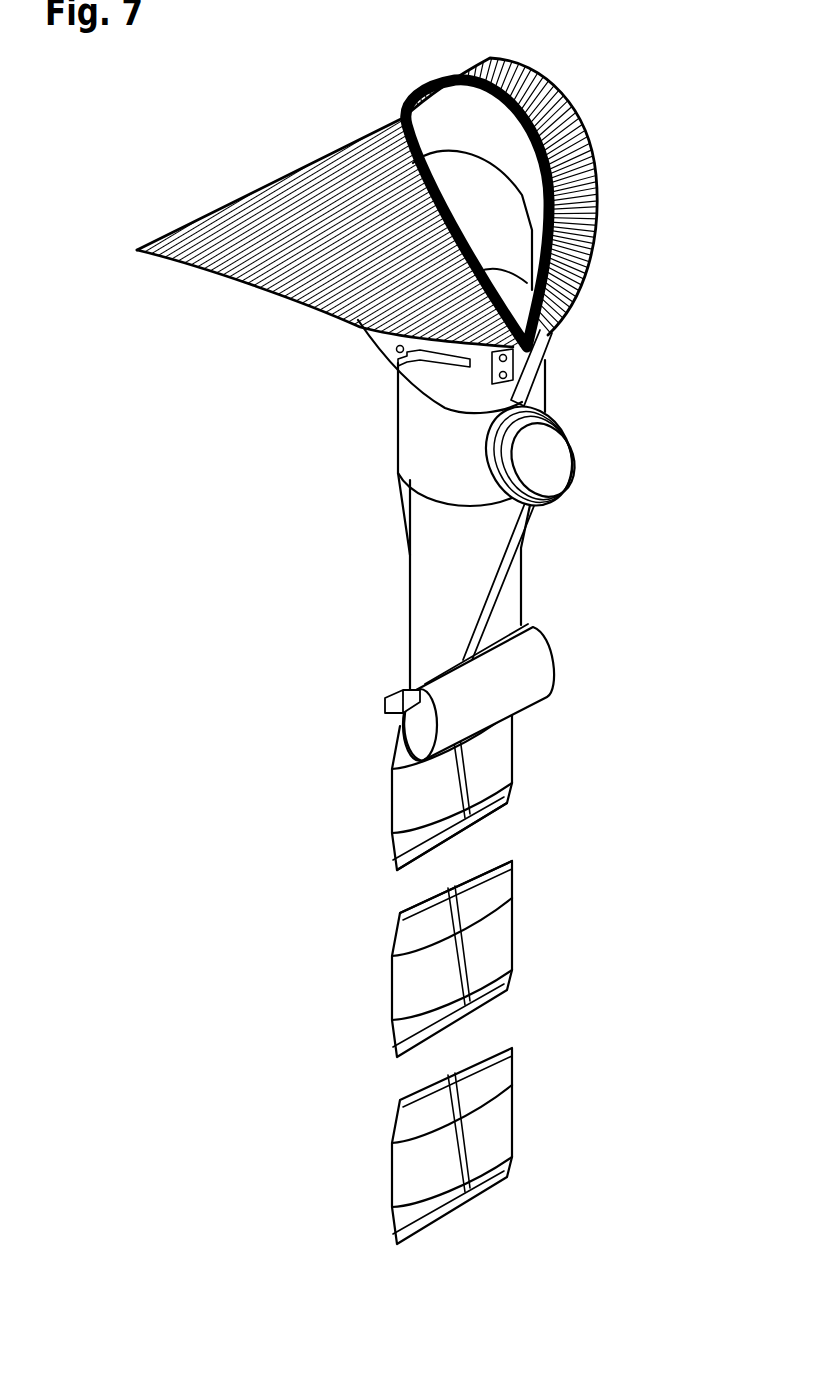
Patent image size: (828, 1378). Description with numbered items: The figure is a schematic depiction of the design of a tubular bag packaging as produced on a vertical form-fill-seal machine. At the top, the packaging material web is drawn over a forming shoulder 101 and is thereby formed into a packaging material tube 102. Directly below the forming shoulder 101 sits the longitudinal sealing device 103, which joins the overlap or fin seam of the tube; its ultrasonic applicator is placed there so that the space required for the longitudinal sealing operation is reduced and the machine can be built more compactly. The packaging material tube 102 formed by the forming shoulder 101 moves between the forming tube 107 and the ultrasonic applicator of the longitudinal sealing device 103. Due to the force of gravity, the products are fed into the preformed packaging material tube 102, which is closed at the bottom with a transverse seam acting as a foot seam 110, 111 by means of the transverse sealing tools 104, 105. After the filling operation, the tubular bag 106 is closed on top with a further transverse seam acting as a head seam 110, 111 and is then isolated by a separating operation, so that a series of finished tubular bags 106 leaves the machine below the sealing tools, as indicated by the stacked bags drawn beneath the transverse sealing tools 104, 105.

The forming shoulder 101 is at (348, 152).
The packaging material tube 102 is at (405, 447).
The longitudinal sealing device 103 is at (545, 473).
The transverse sealing tool 104 is at (403, 695).
The transverse sealing tool 105 is at (432, 737).
The tubular bag 106 is at (407, 994).
The forming tube 107 is at (428, 380).
The transverse seam 110 is at (497, 822).
The transverse seam 111 is at (492, 878).